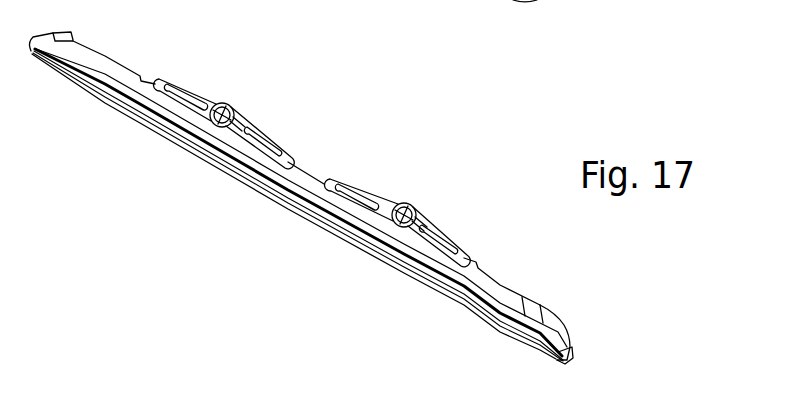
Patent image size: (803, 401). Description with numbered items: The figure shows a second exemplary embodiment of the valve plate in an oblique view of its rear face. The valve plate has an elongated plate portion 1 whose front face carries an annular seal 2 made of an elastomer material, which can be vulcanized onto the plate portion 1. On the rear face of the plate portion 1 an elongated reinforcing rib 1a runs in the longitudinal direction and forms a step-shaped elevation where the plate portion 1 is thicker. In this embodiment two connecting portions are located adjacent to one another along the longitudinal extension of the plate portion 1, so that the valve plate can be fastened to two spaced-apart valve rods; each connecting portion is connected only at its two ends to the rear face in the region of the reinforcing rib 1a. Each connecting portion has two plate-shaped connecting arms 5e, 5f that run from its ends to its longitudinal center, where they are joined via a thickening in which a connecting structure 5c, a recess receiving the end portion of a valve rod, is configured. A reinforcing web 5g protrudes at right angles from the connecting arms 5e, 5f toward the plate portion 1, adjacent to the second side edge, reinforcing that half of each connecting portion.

The plate portion 1 is at (562, 291).
The reinforcing rib 1a is at (555, 322).
The annular seal 2 is at (558, 359).
The connecting structure 5c is at (218, 118).
The connecting arm 5e is at (265, 130).
The connecting arm 5f is at (185, 95).
The reinforcing web 5g is at (254, 139).